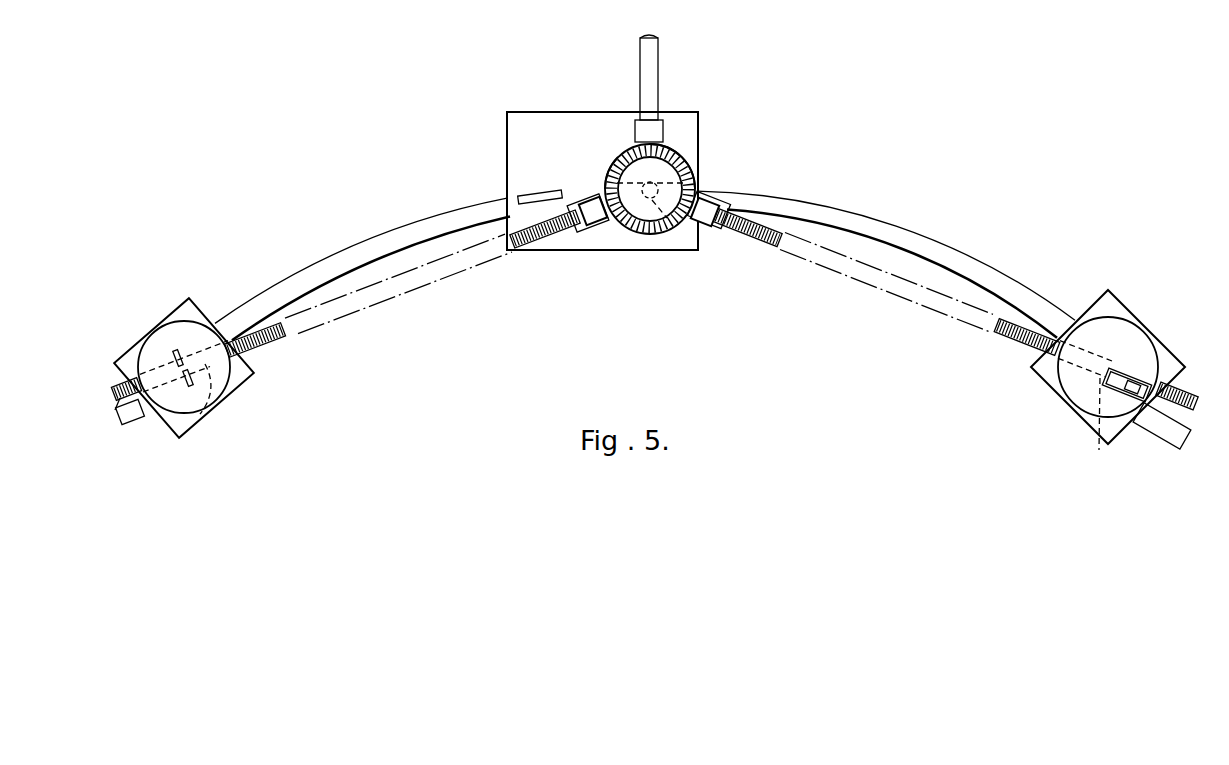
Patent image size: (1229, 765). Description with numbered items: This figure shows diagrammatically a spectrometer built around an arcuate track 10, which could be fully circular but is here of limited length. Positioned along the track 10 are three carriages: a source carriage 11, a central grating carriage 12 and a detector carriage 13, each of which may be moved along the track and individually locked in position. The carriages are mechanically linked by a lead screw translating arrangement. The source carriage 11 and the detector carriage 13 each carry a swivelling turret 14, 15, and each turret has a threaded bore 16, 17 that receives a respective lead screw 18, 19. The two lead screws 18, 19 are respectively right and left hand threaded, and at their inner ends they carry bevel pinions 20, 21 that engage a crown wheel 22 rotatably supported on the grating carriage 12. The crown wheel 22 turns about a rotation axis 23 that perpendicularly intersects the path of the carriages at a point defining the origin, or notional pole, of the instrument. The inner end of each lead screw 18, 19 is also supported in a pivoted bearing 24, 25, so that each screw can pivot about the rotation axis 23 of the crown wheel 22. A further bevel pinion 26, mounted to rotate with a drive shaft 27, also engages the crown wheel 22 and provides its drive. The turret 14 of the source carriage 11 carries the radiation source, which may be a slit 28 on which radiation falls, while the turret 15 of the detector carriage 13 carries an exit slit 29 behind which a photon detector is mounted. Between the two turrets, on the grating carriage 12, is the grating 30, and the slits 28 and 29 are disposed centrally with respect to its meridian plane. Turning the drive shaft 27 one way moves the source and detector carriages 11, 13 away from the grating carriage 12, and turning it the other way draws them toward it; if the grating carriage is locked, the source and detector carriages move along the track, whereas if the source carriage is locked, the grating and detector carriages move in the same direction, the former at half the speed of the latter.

The arcuate track 10 is at (295, 282).
The source carriage 11 is at (240, 372).
The grating carriage 12 is at (637, 252).
The detector carriage 13 is at (1050, 388).
The swivelling turret 14 is at (190, 325).
The swivelling turret 15 is at (1133, 345).
The threaded bore 16 is at (203, 412).
The threaded bore 17 is at (1100, 424).
The lead screw 18 is at (282, 340).
The lead screw 19 is at (1010, 338).
The bevel pinion 20 is at (603, 187).
The bevel pinion 21 is at (683, 222).
The crown wheel 22 is at (694, 187).
The rotation axis 23 is at (653, 177).
The pivoted bearing 24 is at (597, 222).
The pivoted bearing 25 is at (707, 237).
The bevel pinion 26 is at (668, 152).
The drive shaft 27 is at (652, 74).
The slit 28 is at (174, 352).
The exit slit 29 is at (1110, 372).
The grating 30 is at (528, 193).